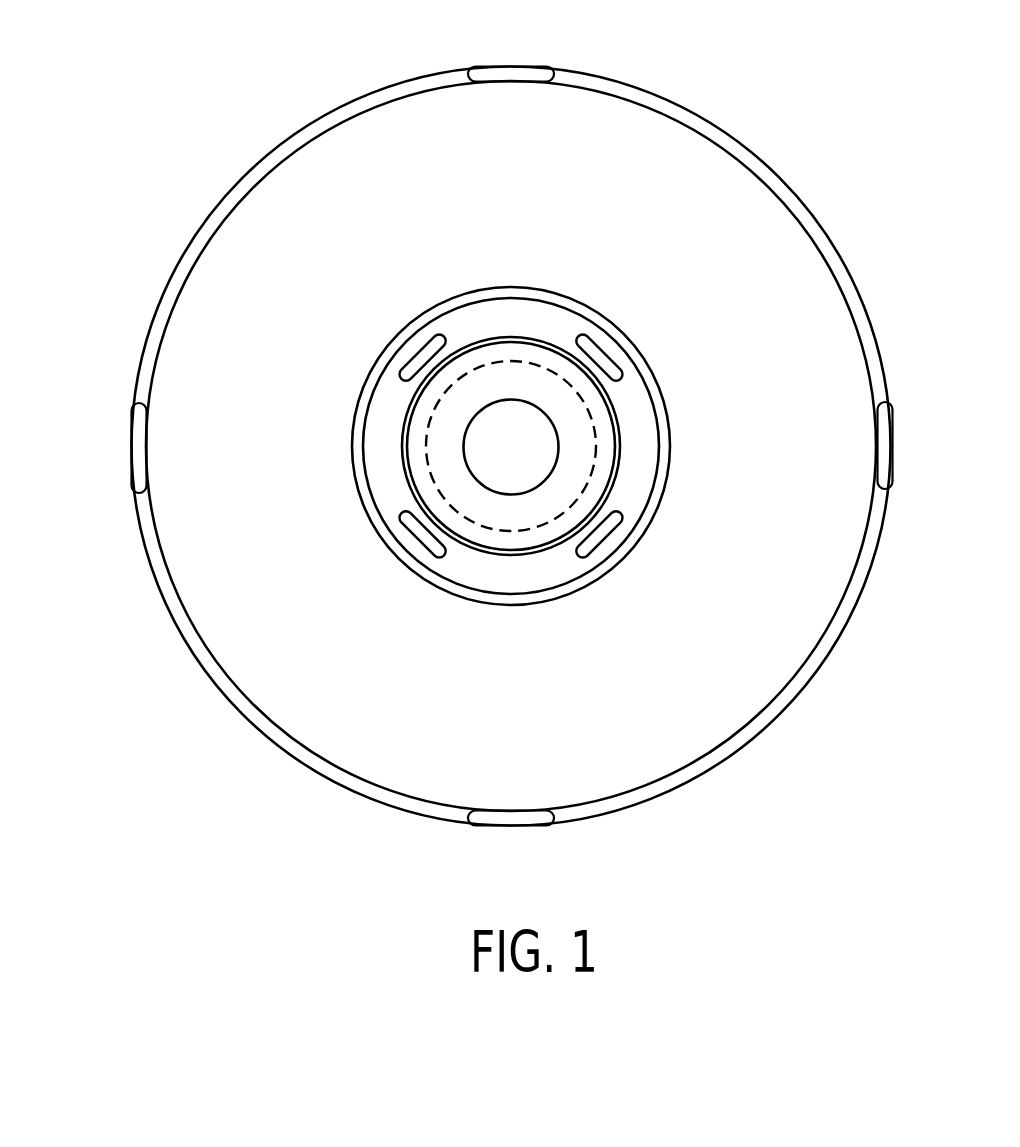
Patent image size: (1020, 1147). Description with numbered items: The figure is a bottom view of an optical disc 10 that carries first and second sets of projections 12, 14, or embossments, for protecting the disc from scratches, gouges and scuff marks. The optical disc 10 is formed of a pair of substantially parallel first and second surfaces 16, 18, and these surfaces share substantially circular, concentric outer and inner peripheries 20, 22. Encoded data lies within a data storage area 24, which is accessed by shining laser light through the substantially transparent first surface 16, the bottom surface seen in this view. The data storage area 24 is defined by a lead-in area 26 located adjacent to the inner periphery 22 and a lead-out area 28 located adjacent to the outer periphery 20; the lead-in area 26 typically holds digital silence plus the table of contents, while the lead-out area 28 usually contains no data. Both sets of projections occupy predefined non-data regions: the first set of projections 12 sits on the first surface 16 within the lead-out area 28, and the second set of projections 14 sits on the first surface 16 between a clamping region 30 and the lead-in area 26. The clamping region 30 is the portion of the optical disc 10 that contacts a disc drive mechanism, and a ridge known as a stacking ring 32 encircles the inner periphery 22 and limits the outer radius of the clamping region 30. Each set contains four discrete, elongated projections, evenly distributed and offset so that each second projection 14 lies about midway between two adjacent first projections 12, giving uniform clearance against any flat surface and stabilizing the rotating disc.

The optical disc 10 is at (822, 140).
The first set of projections 12 is at (510, 77).
The second set of projections 14 is at (440, 340).
The first surface 16 is at (782, 676).
The second surface 18 is at (740, 775).
The outer periphery 20 is at (878, 550).
The inner periphery 22 is at (510, 492).
The data storage area 24 is at (498, 712).
The lead-in area 26 is at (665, 440).
The lead-out area 28 is at (283, 742).
The clamping region 30 is at (572, 470).
The stacking ring 32 is at (400, 440).